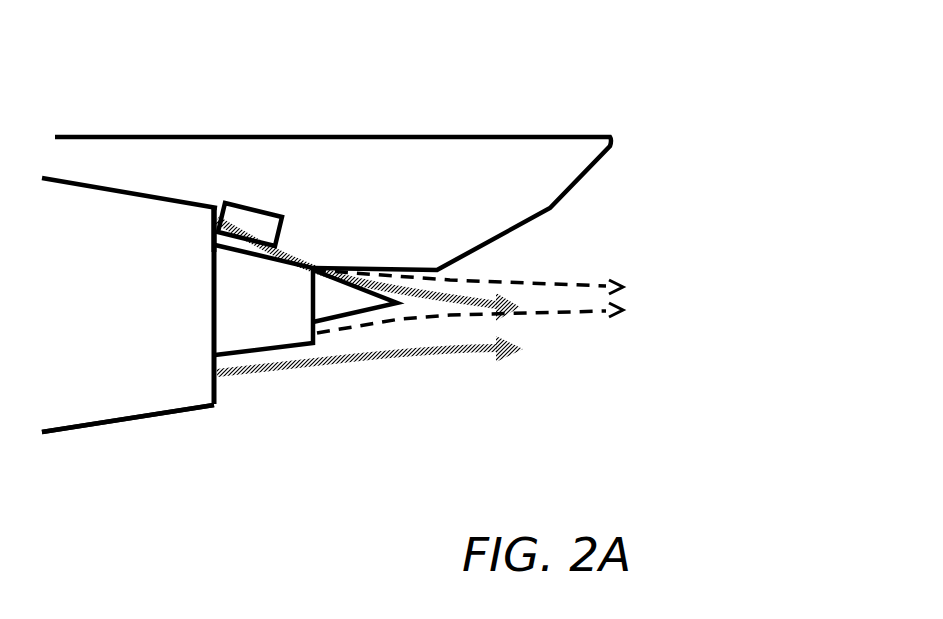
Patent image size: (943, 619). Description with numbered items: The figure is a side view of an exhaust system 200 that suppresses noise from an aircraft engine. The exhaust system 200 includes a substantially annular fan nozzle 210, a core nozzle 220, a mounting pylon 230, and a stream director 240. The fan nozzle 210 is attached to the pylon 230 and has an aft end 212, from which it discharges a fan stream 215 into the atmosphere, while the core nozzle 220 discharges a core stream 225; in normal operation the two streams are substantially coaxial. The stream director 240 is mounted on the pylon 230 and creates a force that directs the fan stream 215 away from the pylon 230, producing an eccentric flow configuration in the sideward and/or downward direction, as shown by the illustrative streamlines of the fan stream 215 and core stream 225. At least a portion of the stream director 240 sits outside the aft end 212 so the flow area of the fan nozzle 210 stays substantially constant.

The exhaust system 200 is at (632, 66).
The fan nozzle 210 is at (101, 411).
The aft end 212 is at (211, 230).
The fan stream 215 is at (540, 349).
The core nozzle 220 is at (256, 338).
The core stream 225 is at (658, 295).
The pylon 230 is at (458, 143).
The stream director 240 is at (250, 223).